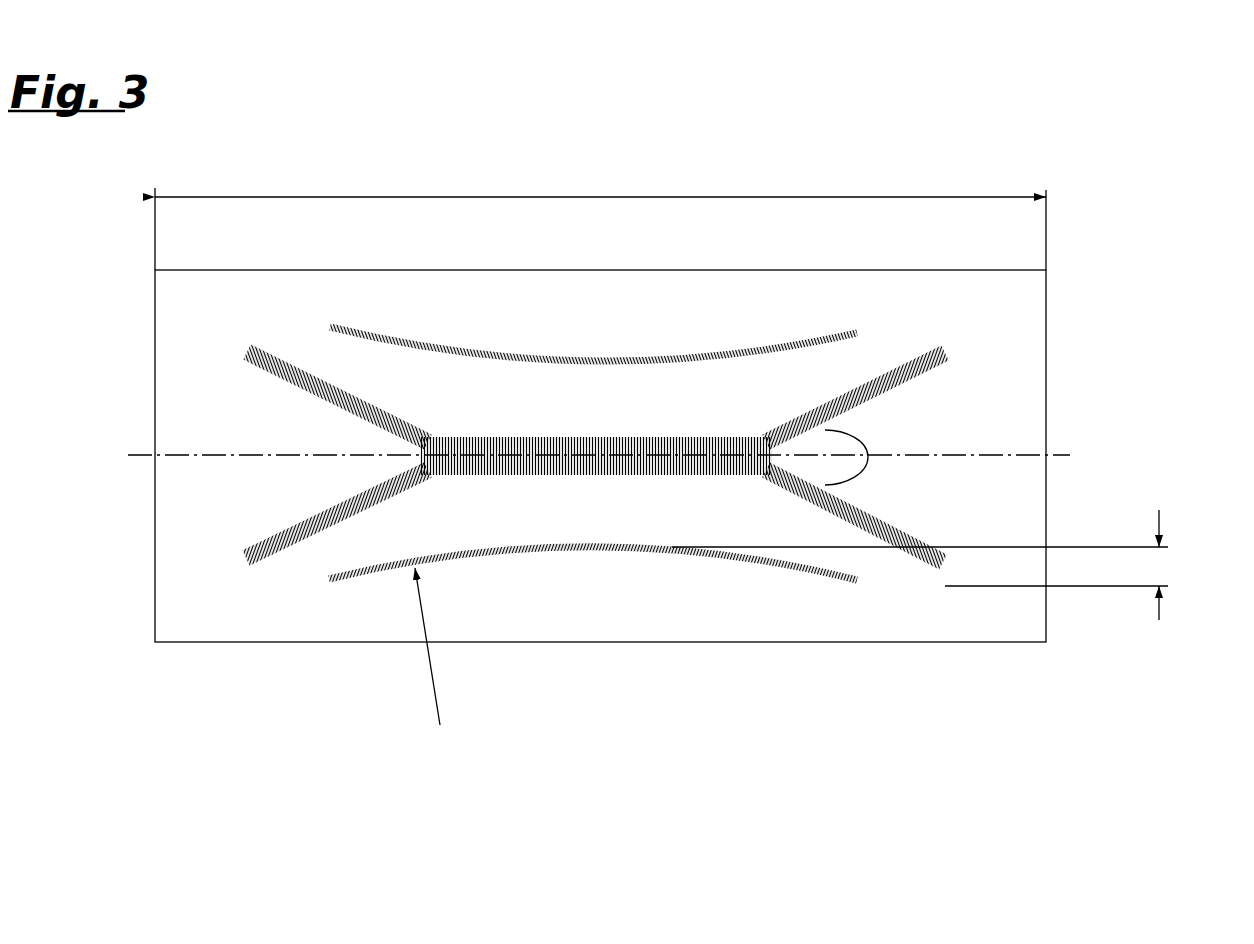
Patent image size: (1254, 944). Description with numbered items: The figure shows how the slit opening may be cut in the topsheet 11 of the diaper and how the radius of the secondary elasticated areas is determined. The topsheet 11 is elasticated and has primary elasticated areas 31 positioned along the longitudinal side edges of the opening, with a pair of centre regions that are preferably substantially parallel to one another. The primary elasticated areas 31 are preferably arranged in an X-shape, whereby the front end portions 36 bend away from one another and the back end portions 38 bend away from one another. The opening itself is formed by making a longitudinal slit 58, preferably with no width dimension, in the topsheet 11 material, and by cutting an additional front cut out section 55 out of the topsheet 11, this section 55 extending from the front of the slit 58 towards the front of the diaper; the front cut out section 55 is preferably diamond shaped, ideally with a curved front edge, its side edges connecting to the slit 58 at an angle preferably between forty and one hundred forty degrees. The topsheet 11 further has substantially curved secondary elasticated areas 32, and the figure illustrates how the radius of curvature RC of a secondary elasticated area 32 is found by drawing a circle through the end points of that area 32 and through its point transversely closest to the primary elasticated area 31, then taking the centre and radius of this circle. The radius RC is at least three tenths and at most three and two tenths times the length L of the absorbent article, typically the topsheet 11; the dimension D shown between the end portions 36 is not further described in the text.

The topsheet 11 is at (180, 320).
The primary elasticated areas 31 is at (596, 437).
The secondary elasticated areas 32 is at (540, 357).
The front end portions 36 is at (838, 400).
The back end portions 38 is at (340, 388).
The front cut out section 55 is at (850, 438).
The longitudinal slit 58 is at (355, 455).
The length of the absorbent article L is at (575, 197).
The distance D is at (1160, 566).
The radius of curvature RC is at (433, 673).